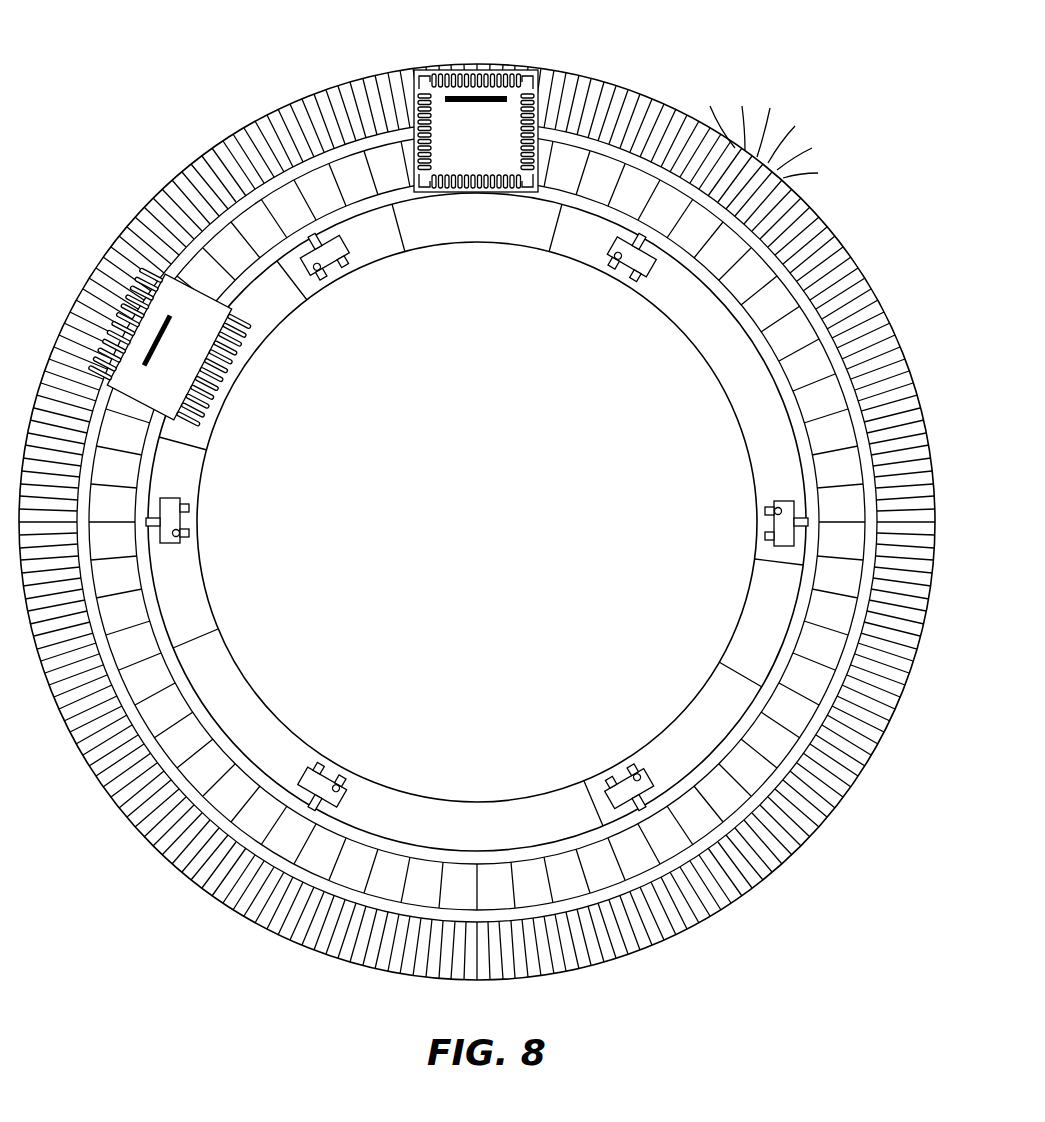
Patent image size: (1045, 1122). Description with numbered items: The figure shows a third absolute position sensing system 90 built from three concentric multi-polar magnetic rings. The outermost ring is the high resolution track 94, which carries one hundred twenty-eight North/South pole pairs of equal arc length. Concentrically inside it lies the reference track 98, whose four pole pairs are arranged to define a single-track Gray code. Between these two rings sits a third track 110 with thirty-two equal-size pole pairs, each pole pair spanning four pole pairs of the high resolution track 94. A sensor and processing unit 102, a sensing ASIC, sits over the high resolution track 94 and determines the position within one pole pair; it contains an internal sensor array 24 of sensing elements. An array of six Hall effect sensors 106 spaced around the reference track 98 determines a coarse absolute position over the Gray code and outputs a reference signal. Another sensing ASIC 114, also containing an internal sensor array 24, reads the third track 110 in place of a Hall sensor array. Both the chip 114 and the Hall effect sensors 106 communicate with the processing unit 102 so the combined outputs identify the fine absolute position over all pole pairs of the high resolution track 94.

The internal sensor array 24 is at (470, 95).
The third absolute position sensing system 90 is at (678, 56).
The high resolution track 94 is at (207, 188).
The reference track 98 is at (708, 372).
The sensor and processing unit 102 is at (539, 108).
The array of Hall effect sensors 106 is at (322, 272).
The third track 110 is at (803, 262).
The sensing ASIC 114 is at (156, 278).